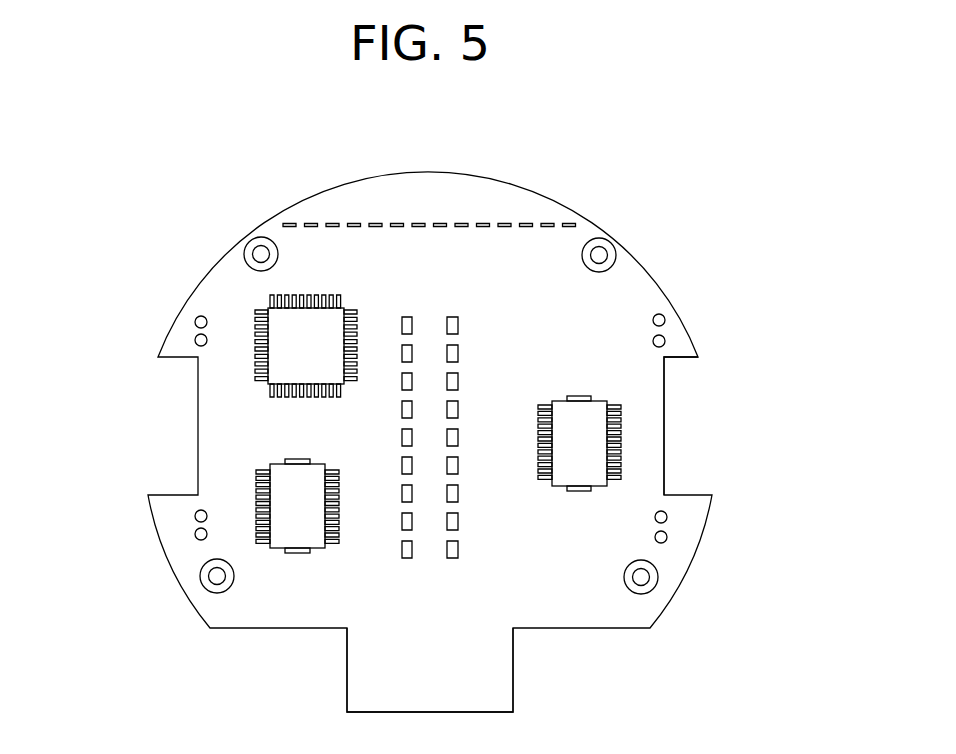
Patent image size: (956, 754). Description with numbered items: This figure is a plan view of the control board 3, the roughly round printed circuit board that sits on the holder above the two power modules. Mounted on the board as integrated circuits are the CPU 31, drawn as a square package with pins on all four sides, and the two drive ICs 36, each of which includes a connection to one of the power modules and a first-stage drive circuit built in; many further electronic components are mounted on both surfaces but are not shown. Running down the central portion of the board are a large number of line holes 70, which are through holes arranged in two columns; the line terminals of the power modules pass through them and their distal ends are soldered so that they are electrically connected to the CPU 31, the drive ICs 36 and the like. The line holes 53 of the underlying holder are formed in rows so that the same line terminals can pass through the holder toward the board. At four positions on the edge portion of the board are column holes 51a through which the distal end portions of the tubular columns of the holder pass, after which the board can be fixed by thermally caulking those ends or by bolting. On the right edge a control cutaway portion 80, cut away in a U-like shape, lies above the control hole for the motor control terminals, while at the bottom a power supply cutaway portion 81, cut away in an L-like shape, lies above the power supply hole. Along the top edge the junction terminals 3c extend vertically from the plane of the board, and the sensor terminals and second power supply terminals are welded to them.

The control board 3 is at (693, 310).
The junction terminals 3c is at (575, 225).
The CPU 31 is at (267, 307).
The drive ICs 36 is at (267, 547).
The column holes 51a is at (607, 255).
The line holes 53 is at (195, 534).
The line holes 70 is at (459, 317).
The control cutaway portions 80 is at (678, 360).
The power supply cutaway portions 81 is at (580, 628).